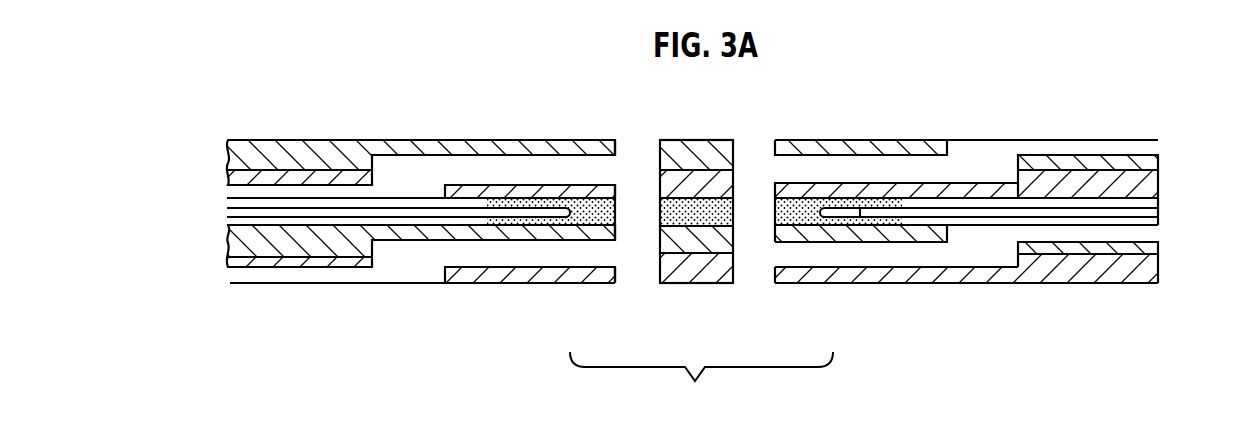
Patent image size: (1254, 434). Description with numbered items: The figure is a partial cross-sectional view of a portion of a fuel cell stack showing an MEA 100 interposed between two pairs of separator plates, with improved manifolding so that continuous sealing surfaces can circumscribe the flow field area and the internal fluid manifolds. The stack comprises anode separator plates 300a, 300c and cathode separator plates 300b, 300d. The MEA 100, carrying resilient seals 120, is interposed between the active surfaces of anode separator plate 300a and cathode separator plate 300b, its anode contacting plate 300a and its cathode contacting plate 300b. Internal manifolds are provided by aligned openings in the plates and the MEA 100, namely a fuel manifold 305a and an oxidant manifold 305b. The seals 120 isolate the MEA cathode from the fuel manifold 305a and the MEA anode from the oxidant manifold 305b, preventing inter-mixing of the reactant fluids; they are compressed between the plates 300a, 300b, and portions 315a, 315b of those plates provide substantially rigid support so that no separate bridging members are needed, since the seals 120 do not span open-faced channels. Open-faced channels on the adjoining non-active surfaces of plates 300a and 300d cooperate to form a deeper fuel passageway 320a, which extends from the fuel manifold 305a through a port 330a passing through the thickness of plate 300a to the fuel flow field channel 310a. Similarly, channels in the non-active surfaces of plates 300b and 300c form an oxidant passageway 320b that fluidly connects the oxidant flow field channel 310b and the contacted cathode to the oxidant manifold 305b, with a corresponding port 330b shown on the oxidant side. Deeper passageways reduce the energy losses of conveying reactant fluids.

The MEA 100 is at (222, 197).
The seals 120 is at (653, 224).
The anode separator plate 300a is at (1147, 188).
The cathode separator plate 300b is at (238, 246).
The anode separator plate 300c is at (1147, 267).
The cathode separator plate 300d is at (232, 152).
The fuel manifold 305a is at (628, 275).
The oxidant manifold 305b is at (750, 157).
The fuel flow field channel 310a is at (330, 190).
The oxidant flow field channel 310b is at (1085, 233).
The portion of separator plate 315a is at (600, 195).
The portion of separator plate 315b is at (857, 253).
The fuel passageway 320a is at (517, 172).
The oxidant passageway 320b is at (788, 253).
The port 330a is at (412, 180).
The lower spacer layer 330b is at (992, 232).